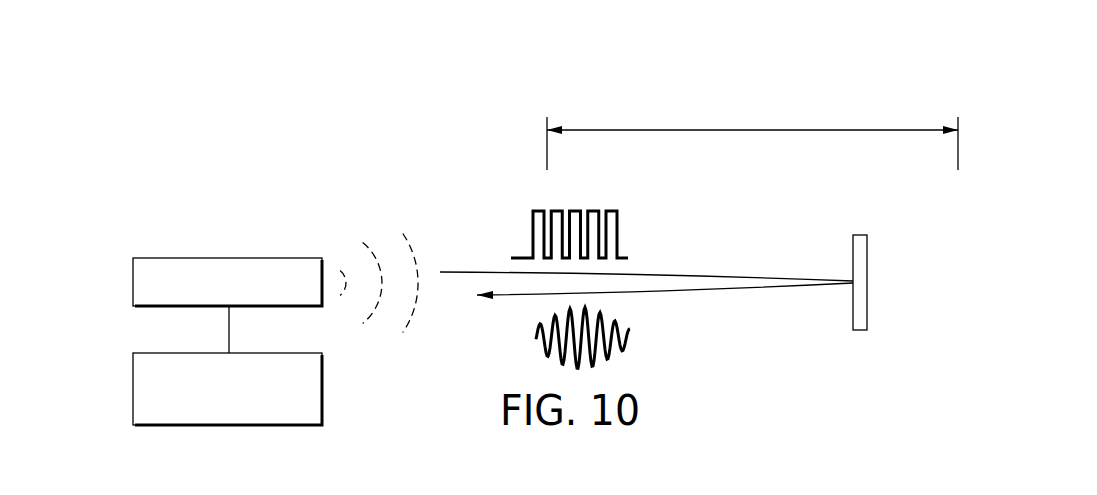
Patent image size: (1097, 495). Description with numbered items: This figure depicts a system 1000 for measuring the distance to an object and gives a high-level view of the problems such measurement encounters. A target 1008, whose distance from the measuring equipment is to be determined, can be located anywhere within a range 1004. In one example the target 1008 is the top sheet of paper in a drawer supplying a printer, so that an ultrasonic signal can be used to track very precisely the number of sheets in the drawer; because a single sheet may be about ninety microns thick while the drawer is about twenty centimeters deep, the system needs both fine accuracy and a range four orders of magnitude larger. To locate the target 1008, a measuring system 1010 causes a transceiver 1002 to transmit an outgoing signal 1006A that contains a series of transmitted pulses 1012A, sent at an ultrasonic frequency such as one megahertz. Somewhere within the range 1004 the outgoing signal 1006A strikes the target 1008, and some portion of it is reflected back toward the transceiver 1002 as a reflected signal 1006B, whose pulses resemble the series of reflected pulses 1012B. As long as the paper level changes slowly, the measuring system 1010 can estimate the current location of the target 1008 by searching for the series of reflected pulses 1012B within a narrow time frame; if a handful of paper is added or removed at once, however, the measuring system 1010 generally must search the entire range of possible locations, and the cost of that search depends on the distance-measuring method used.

The system 1000 is at (361, 64).
The transceiver 1002 is at (133, 283).
The range 1004 is at (752, 130).
The outgoing signal 1006A is at (735, 272).
The reflected signal 1006B is at (720, 295).
The target 1008 is at (867, 283).
The measuring system 1010 is at (133, 390).
The series of transmitted pulses 1012A is at (533, 235).
The series of reflected pulses 1012B is at (533, 333).